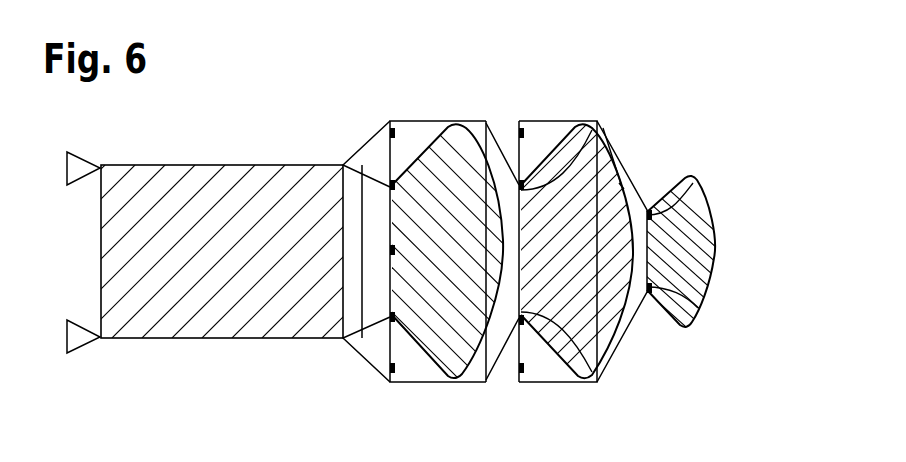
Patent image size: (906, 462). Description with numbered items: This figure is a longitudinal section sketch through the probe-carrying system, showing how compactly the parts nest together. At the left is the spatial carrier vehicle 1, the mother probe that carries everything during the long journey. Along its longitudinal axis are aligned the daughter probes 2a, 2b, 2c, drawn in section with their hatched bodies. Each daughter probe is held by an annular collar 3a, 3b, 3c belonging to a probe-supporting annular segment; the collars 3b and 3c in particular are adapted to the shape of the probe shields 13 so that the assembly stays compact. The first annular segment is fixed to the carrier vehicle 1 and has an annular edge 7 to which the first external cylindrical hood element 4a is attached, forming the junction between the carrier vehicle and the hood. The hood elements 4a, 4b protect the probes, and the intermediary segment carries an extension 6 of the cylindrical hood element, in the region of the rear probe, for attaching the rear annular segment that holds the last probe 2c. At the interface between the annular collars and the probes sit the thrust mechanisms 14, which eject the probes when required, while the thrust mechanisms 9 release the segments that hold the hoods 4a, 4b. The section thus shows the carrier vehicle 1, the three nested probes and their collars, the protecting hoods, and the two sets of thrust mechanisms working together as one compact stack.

The spatial carrier vehicle 1 is at (203, 293).
The daughter probe 2a is at (443, 363).
The daughter probe 2b is at (607, 340).
The daughter probe 2c is at (682, 262).
The annular collar 3a is at (373, 172).
The annular collar 3b is at (503, 372).
The annular collar 3c is at (633, 317).
The external cylindrical hood element 4a is at (422, 120).
The external cylindrical hood element 4b is at (560, 120).
The extension of the cylindrical hood element 6 is at (510, 120).
The annular edge 7 is at (372, 367).
The thrust mechanism 9 is at (401, 128).
The probe shield 13 is at (630, 186).
The thrust mechanism 14 is at (390, 252).